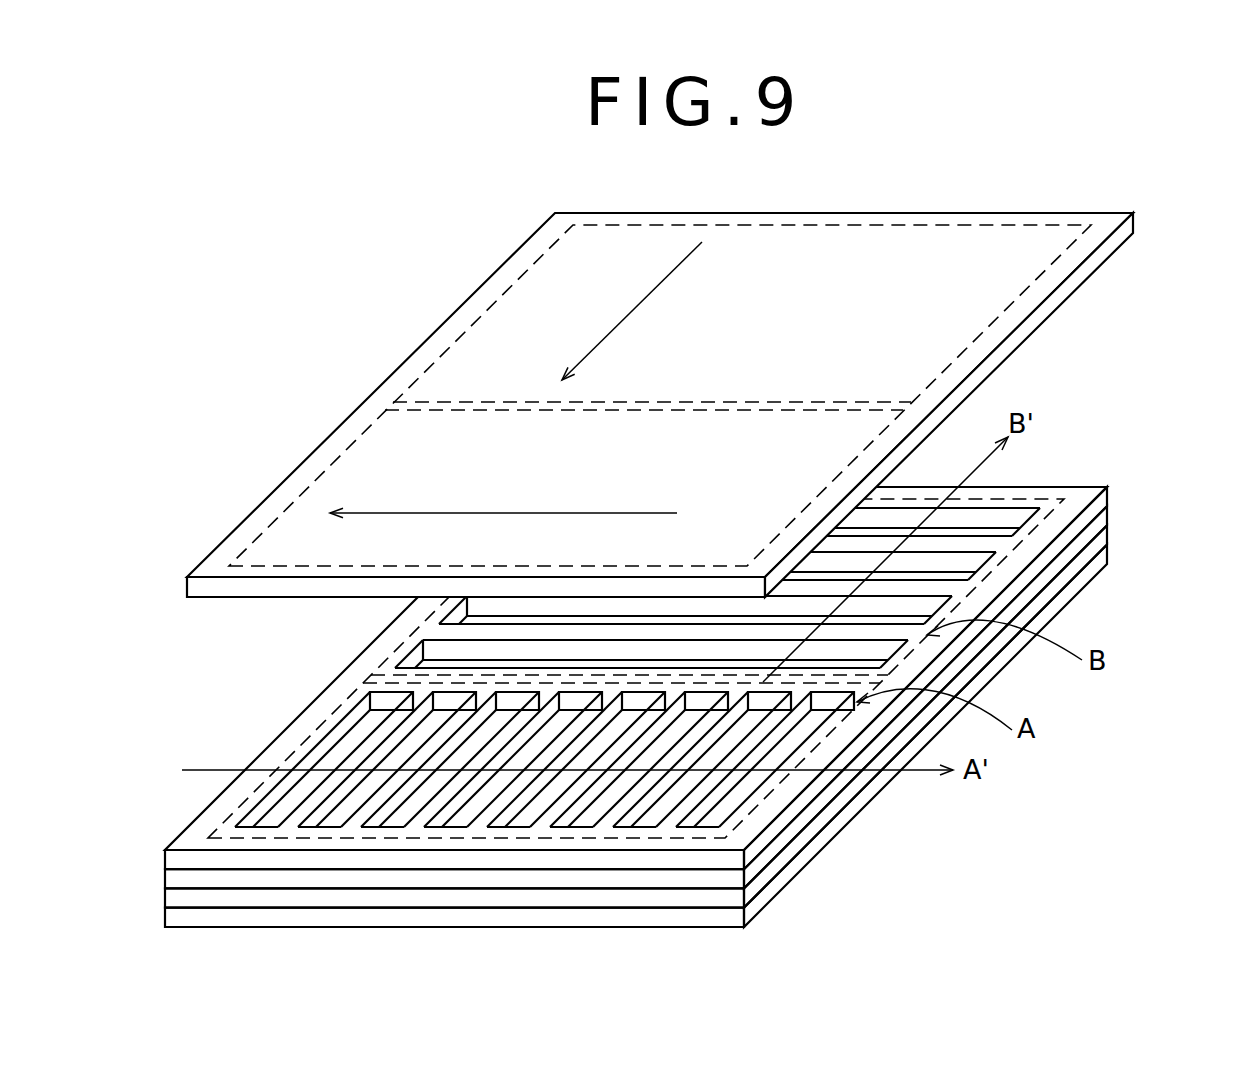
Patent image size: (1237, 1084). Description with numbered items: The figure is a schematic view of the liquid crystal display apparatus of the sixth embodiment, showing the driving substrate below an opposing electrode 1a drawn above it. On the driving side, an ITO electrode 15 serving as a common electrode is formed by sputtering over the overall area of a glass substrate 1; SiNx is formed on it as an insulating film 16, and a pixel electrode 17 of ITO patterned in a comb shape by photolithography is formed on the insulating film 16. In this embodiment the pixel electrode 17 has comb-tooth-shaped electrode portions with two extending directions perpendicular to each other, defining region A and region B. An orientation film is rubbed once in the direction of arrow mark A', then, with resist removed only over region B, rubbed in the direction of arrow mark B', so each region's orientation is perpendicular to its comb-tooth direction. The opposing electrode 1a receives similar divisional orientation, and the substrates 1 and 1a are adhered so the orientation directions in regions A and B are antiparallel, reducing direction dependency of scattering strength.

The glass substrate 1 is at (1108, 560).
The opposing electrode 1a is at (1133, 223).
The ITO electrode 15 is at (1108, 540).
The insulating film 16 is at (1108, 520).
The pixel electrode 17 is at (1108, 500).